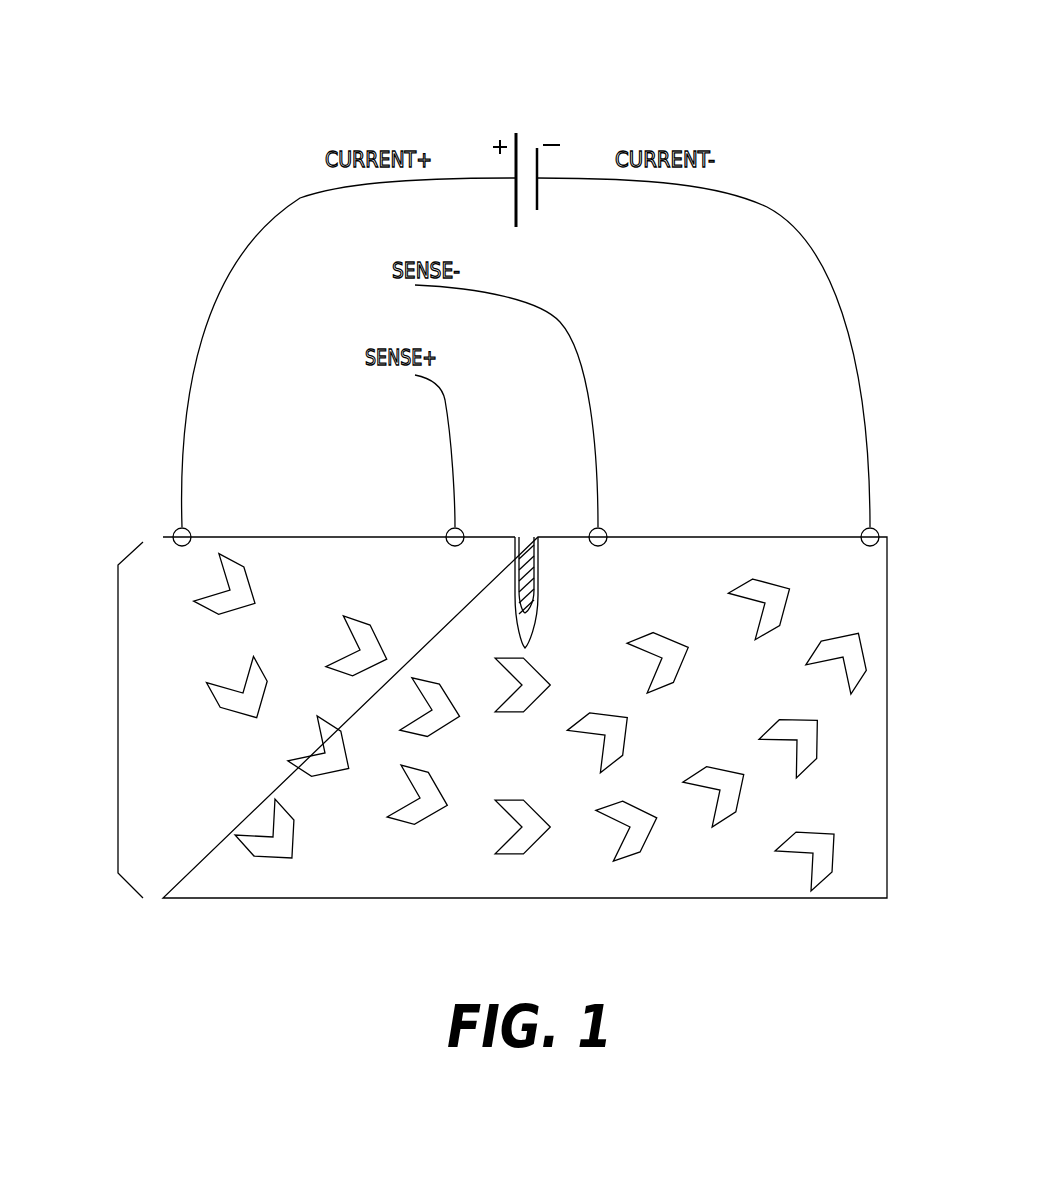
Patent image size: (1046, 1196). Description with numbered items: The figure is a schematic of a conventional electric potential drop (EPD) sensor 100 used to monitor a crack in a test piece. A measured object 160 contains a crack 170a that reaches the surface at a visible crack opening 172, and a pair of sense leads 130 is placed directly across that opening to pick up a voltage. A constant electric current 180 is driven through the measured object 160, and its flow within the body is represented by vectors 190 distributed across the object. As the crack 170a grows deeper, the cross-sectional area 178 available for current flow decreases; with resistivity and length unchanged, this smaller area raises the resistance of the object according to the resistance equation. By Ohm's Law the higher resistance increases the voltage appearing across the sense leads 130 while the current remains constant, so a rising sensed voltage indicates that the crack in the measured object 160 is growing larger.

The EPD sensor 100 is at (653, 88).
The sense leads 130 is at (560, 322).
The measured object 160 is at (887, 700).
The crack 170a is at (533, 562).
The visible crack opening 172 is at (527, 540).
The cross-sectional area 178 is at (118, 722).
The electric current 180 is at (298, 198).
The vectors 190 is at (272, 847).